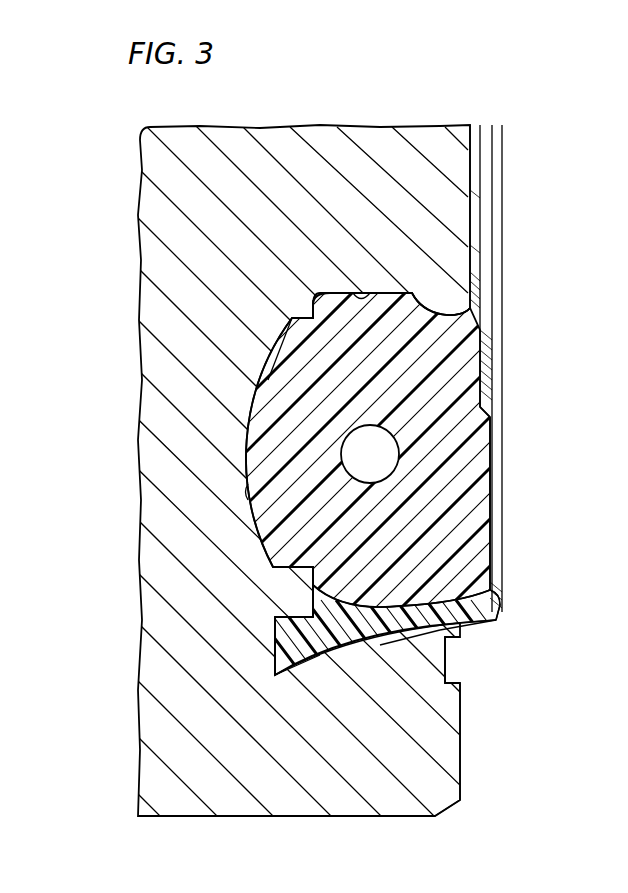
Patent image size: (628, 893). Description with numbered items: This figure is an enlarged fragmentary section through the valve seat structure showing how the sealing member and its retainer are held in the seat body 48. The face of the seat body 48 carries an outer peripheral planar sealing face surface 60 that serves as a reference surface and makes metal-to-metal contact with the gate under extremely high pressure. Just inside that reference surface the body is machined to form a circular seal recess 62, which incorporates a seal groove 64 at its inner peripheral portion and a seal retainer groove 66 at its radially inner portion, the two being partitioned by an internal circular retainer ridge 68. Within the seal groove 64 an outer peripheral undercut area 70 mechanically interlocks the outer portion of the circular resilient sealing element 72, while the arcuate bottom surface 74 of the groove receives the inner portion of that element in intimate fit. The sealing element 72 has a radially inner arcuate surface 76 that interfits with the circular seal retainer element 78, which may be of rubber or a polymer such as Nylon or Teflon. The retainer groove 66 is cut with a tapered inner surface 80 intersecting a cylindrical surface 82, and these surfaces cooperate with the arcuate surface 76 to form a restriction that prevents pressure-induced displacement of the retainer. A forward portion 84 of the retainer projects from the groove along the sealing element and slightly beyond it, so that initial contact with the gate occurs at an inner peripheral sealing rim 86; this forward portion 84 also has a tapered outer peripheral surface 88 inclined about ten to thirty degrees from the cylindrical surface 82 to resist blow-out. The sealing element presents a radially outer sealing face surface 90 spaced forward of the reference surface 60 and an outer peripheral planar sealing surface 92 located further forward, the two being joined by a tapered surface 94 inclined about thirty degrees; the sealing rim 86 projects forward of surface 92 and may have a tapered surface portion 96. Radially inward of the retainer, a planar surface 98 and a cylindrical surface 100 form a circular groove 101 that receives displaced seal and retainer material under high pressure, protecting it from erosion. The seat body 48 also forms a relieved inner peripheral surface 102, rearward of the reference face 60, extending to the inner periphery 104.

The seat body 48 is at (290, 137).
The sealing face surface 60 is at (487, 192).
The seal recess 62 is at (446, 405).
The seal groove 64 is at (282, 356).
The seal retainer groove 66 is at (360, 652).
The retainer ridge 68 is at (295, 588).
The undercut area 70 is at (362, 292).
The sealing element 72 is at (475, 322).
The bottom surface 74 is at (248, 492).
The arcuate surface 76 is at (272, 655).
The seal retainer element 78 is at (275, 630).
The tapered inner surface 80 is at (300, 674).
The cylindrical surface 82 is at (408, 642).
The forward portion 84 is at (503, 618).
The sealing rim 86 is at (505, 602).
The tapered outer peripheral surface 88 is at (500, 630).
The radially outer sealing face surface 90 is at (487, 360).
The outer peripheral planar sealing surface 92 is at (492, 490).
The tapered surface 94 is at (494, 412).
The tapered surface portion 96 is at (500, 585).
The planar surface 98 is at (462, 652).
The cylindrical surface 100 is at (452, 682).
The circular groove 101 is at (455, 665).
The relieved inner peripheral surface 102 is at (461, 790).
The inner periphery 104 is at (305, 818).